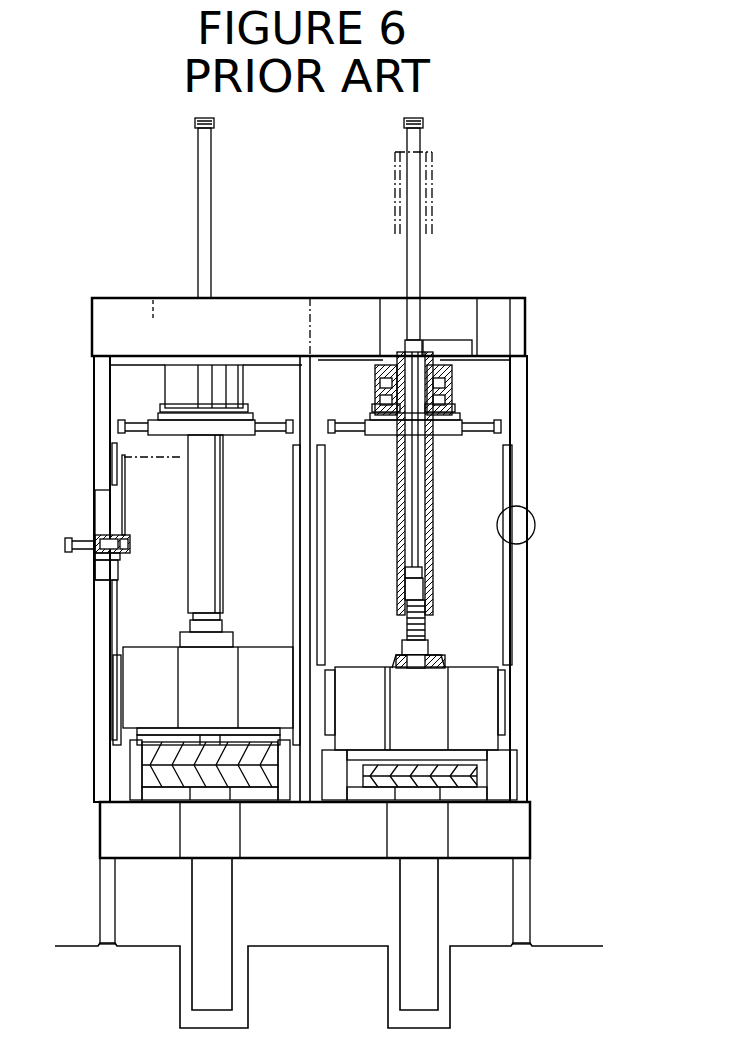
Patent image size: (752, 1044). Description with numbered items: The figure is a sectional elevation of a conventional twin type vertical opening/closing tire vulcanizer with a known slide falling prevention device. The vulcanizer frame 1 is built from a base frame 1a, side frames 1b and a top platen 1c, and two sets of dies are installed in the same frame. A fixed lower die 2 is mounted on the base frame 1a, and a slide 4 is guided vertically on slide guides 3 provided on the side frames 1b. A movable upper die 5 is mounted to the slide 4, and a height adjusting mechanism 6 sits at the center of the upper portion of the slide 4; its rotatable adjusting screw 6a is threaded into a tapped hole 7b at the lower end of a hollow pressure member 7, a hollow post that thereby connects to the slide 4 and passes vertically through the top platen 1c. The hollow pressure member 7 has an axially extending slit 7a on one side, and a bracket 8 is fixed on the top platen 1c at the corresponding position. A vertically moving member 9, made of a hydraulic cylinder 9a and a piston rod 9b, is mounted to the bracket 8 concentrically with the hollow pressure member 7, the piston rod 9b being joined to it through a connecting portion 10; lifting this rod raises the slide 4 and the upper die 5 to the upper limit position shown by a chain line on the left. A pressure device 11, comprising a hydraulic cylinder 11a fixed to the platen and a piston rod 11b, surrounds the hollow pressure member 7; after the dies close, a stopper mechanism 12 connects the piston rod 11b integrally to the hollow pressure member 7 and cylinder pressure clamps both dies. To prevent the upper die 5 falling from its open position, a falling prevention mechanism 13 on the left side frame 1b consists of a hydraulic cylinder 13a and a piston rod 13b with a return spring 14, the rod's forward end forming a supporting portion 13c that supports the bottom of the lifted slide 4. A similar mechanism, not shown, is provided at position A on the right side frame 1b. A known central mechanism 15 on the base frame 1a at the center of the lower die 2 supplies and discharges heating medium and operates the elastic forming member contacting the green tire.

The vulcanizer frame 1 is at (236, 296).
The base frame 1a is at (157, 846).
The side frame 1b is at (94, 630).
The top platen 1c is at (155, 300).
The fixed lower die 2 is at (160, 800).
The slide guide 3 is at (118, 604).
The slide 4 is at (130, 468).
The movable upper die 5 is at (150, 757).
The height adjusting mechanism 6 is at (232, 622).
The adjusting screw 6a is at (219, 614).
The hollow pressure member 7 is at (224, 518).
The slit 7a is at (432, 480).
The tapped hole 7b is at (405, 604).
The bracket 8 is at (455, 344).
The vertically moving member 9 is at (220, 225).
The hydraulic cylinder 9a is at (199, 234).
The piston rod 9b is at (411, 470).
The connecting portion 10 is at (405, 566).
The pressure device 11 is at (252, 398).
The hydraulic cylinder 11a is at (168, 382).
The piston rod 11b is at (185, 410).
The stopper mechanism 12 is at (152, 440).
The falling prevention mechanism 13 is at (66, 546).
The hydraulic cylinder 13a is at (78, 538).
The piston rod 13b is at (121, 550).
The supporting portion 13c is at (122, 538).
The return spring 14 is at (98, 572).
The central mechanism 15 is at (196, 928).
The position A is at (535, 522).